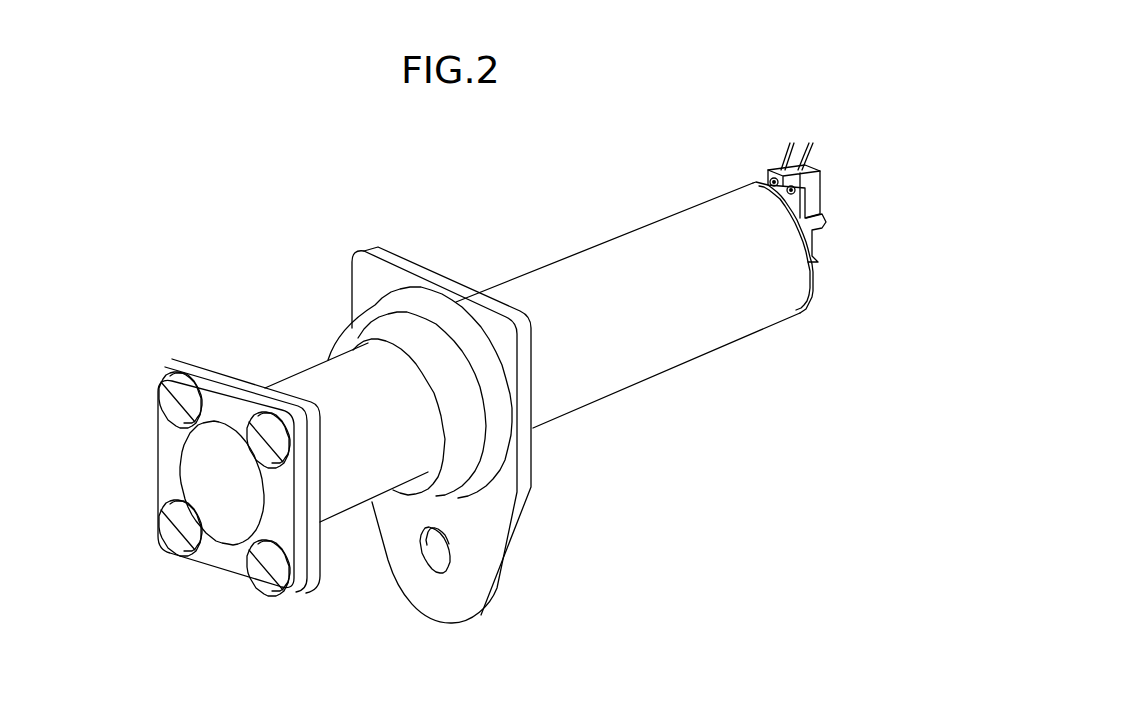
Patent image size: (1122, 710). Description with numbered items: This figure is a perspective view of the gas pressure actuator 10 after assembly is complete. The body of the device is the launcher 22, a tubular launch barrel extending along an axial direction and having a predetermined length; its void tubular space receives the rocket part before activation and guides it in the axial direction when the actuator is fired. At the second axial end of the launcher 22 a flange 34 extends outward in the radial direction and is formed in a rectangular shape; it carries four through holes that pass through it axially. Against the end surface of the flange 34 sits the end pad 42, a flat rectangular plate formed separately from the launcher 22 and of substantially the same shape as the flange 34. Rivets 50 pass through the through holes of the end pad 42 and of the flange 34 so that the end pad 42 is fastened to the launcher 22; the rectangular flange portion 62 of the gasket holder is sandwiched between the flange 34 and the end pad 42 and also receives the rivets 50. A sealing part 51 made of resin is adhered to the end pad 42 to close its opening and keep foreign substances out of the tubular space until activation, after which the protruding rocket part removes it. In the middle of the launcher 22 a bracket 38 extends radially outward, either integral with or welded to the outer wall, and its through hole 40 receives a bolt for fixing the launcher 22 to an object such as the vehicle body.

The gas pressure actuator 10 is at (278, 297).
The launcher 22 is at (627, 243).
The flange 34 is at (208, 362).
The bracket 38 is at (496, 532).
The through hole 40 is at (425, 560).
The end pad 42 is at (222, 566).
The rivets 50 is at (170, 537).
The sealing part 51 is at (215, 464).
The flange portion 62 is at (188, 364).